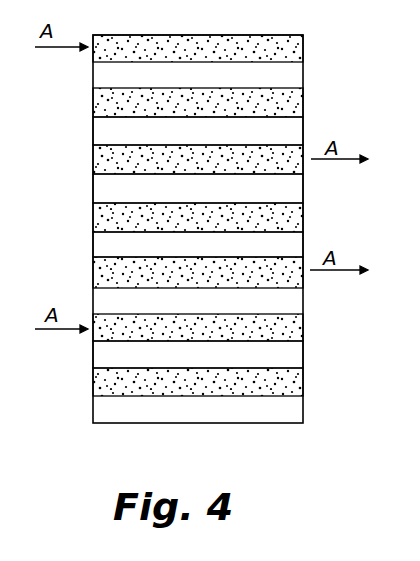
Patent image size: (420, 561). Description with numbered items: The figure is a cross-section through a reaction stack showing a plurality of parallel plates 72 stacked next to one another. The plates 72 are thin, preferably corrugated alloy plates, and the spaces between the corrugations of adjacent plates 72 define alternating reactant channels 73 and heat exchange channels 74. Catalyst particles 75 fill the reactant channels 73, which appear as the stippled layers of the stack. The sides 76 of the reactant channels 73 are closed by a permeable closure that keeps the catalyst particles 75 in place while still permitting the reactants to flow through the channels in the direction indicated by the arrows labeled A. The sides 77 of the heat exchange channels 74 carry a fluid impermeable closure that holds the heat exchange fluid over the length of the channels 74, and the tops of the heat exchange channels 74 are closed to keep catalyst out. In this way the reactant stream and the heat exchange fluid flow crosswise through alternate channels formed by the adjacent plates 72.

The plate 72 is at (106, 146).
The reactant channel 73 is at (106, 152).
The heat exchange channel 74 is at (110, 188).
The catalyst particles 75 is at (280, 327).
The side of reactant flow channel 76 is at (102, 266).
The side of heat exchange channel 77 is at (92, 200).